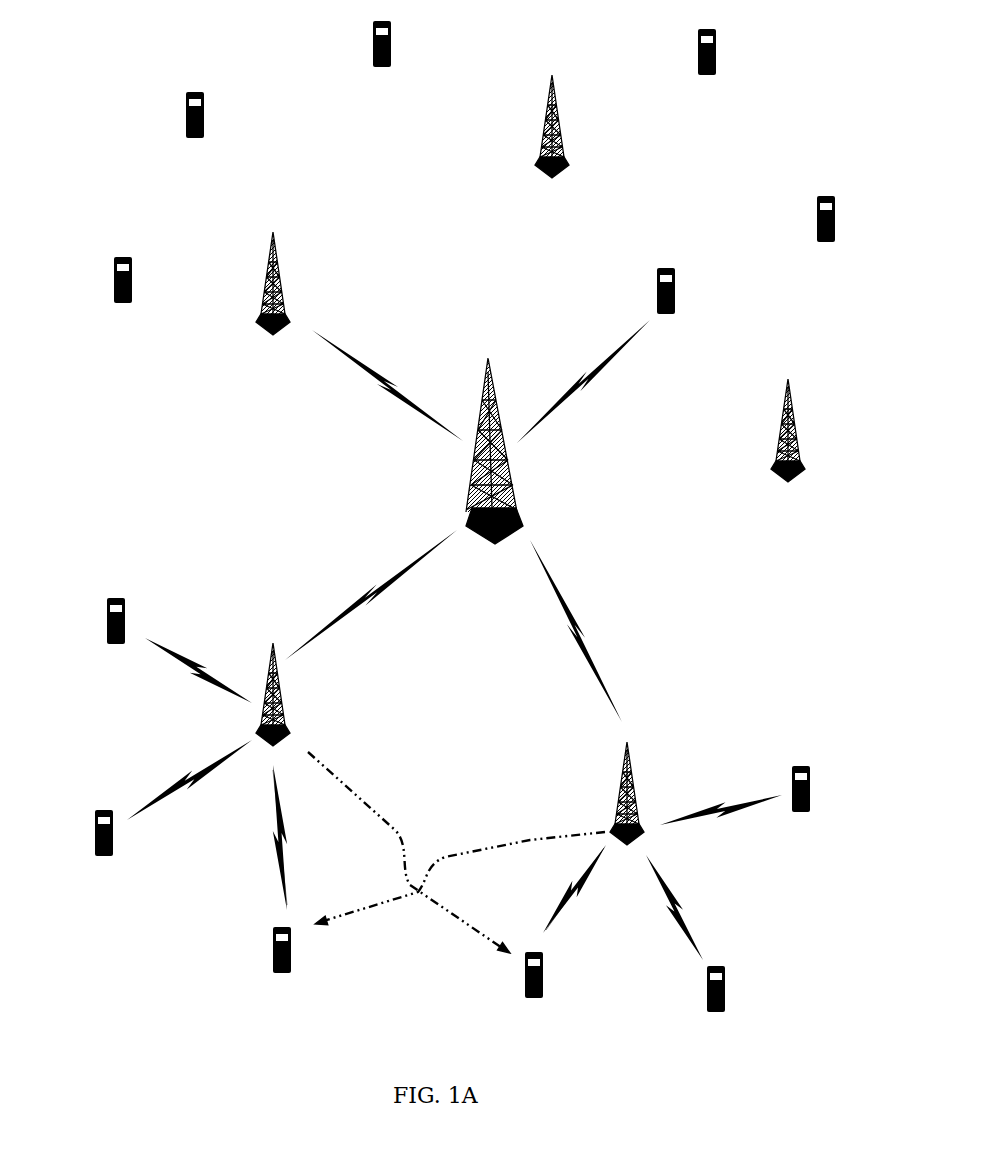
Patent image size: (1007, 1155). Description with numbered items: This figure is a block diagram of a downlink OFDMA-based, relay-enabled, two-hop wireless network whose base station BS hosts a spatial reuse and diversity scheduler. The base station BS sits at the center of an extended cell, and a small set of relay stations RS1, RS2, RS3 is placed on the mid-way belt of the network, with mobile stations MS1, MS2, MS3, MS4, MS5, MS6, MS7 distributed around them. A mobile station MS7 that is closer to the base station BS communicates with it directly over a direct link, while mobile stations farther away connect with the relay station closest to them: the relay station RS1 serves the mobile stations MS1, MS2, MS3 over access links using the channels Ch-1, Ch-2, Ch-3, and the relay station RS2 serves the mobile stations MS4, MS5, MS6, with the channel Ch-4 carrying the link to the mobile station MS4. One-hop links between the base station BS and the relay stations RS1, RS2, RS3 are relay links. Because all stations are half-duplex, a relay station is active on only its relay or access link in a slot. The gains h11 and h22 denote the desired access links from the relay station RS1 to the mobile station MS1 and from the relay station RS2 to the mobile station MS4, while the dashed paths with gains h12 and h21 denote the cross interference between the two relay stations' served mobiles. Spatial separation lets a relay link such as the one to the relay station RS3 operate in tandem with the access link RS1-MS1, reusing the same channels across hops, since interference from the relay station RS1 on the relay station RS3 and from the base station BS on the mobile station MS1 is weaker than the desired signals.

The base station BS is at (467, 520).
The relay station RS1 is at (283, 673).
The relay station RS2 is at (651, 784).
The relay station RS3 is at (250, 309).
The mobile station MS1 is at (289, 975).
The mobile station MS2 is at (73, 833).
The mobile station MS3 is at (86, 621).
The mobile station MS4 is at (530, 1005).
The mobile station MS5 is at (729, 1016).
The mobile station MS6 is at (819, 818).
The mobile station MS7 is at (697, 294).
The channel Ch-1 is at (254, 837).
The channel Ch-2 is at (187, 780).
The channel Ch-3 is at (199, 667).
The channel Ch-4 is at (580, 889).
The gain h11 is at (294, 837).
The gain h12 is at (409, 852).
The gain h21 is at (460, 864).
The gain h22 is at (564, 889).